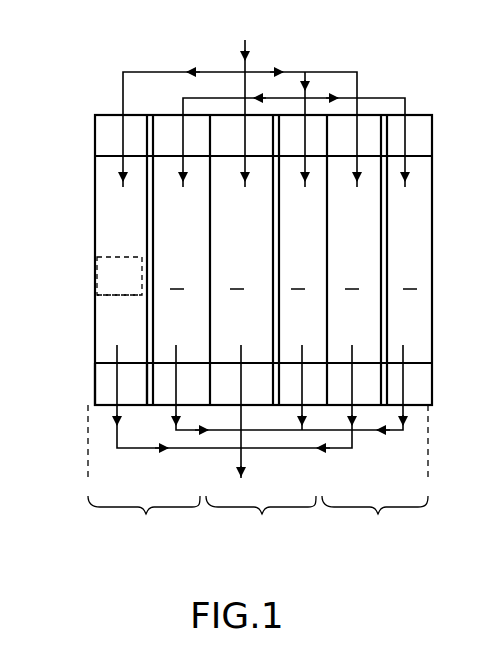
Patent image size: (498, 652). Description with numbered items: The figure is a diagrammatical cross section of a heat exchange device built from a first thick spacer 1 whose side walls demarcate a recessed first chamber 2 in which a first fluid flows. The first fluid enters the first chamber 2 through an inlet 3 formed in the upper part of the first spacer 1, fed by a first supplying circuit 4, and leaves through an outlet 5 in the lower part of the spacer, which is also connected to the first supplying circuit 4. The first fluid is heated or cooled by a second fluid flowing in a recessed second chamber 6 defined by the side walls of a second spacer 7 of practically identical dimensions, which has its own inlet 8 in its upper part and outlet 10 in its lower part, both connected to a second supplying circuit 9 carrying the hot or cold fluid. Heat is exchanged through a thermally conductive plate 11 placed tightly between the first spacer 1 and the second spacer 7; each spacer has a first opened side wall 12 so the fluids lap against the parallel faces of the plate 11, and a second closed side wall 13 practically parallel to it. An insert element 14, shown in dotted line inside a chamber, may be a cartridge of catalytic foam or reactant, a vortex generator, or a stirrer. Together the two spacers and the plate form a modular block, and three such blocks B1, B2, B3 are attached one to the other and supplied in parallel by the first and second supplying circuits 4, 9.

The first spacer 1 is at (95, 137).
The first chamber 2 is at (116, 238).
The inlet 3 is at (117, 128).
The first supplying circuit 4 is at (125, 448).
The outlet 5 is at (103, 398).
The second chamber 6 is at (345, 160).
The second spacer 7 is at (296, 160).
The inlet 8 is at (178, 128).
The second supplying circuit 9 is at (385, 432).
The outlet 10 is at (165, 398).
The plate 11 is at (142, 295).
The first opened side wall 12 is at (141, 203).
The second closed side wall 13 is at (92, 283).
The insert element 14 is at (113, 288).
The first modular block B1 is at (144, 473).
The second modular block B2 is at (261, 519).
The third modular block B3 is at (375, 473).